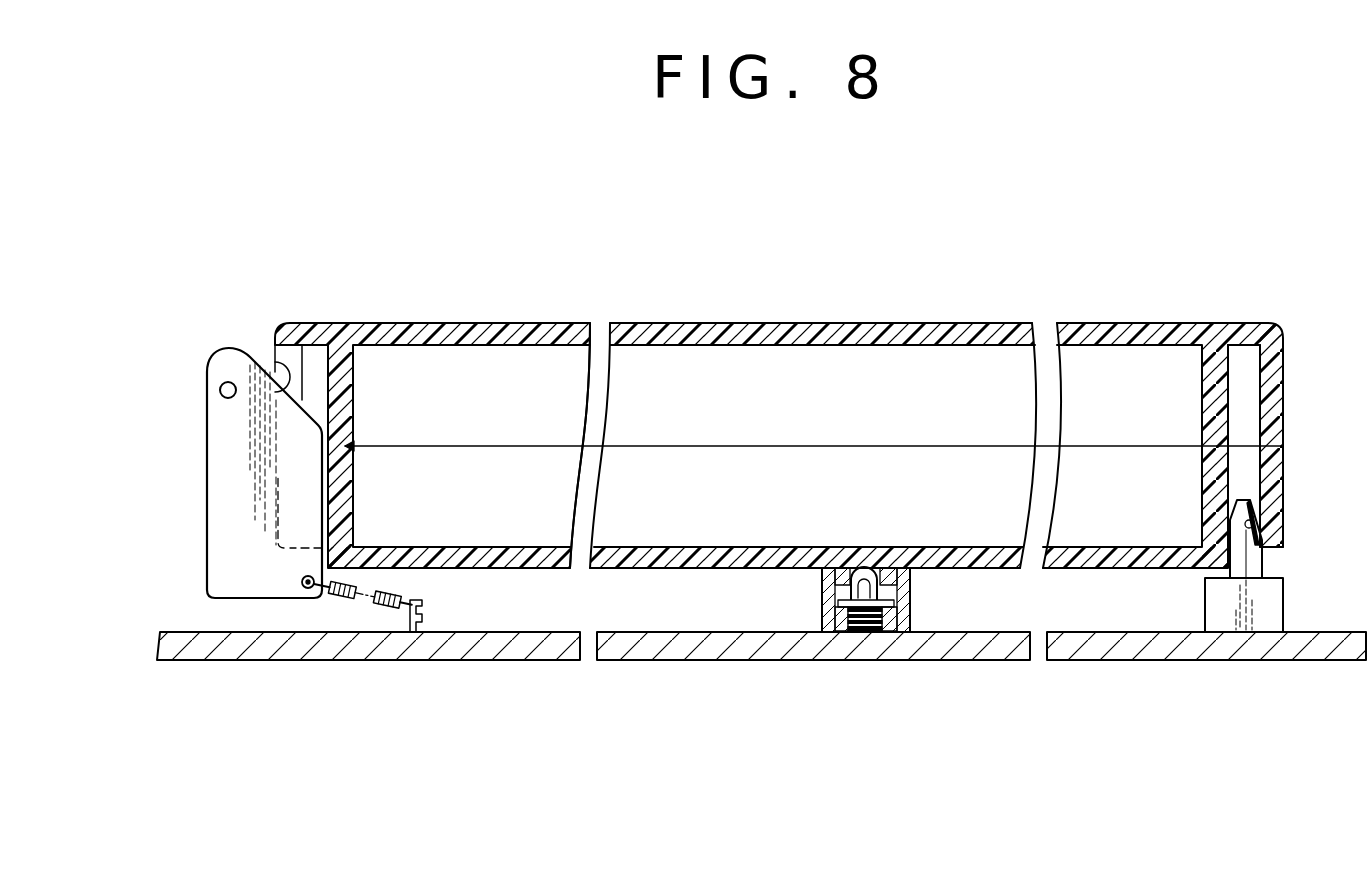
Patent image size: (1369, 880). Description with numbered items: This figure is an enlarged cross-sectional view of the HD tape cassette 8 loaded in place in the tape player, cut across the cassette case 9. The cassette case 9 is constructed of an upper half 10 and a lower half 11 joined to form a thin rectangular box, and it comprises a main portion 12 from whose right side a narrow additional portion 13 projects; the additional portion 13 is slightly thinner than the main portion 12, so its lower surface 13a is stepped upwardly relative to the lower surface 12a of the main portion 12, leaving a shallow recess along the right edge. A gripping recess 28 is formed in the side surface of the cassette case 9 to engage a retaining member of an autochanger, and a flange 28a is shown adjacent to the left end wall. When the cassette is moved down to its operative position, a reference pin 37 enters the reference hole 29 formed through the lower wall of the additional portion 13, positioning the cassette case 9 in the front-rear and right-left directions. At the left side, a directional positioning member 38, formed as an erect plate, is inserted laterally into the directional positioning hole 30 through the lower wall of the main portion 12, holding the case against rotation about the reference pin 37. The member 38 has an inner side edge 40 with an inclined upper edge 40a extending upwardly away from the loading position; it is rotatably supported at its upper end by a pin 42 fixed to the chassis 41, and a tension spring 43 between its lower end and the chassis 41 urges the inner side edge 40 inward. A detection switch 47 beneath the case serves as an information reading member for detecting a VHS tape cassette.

The HD tape cassette 8 is at (1097, 323).
The cassette case 9 is at (1170, 322).
The upper half 10 is at (905, 322).
The lower half 11 is at (773, 567).
The main portion 12 is at (773, 322).
The lower surface of main portion 12a is at (675, 570).
The additional portion 13 is at (1257, 322).
The lower surface of additional portion 13a is at (1268, 547).
The gripping recess 28 is at (1243, 368).
The end flange 28a is at (312, 358).
The reference hole 29 is at (1252, 508).
The directional positioning hole 30 is at (322, 556).
The reference pin 37 is at (1262, 563).
The directional positioning member 38 is at (225, 525).
The inner side edge 40 is at (330, 492).
The inclined upper edge 40a is at (273, 362).
The chassis 41 is at (246, 660).
The pin 42 is at (220, 390).
The tension spring 43 is at (383, 612).
The detection switch 47 is at (911, 590).